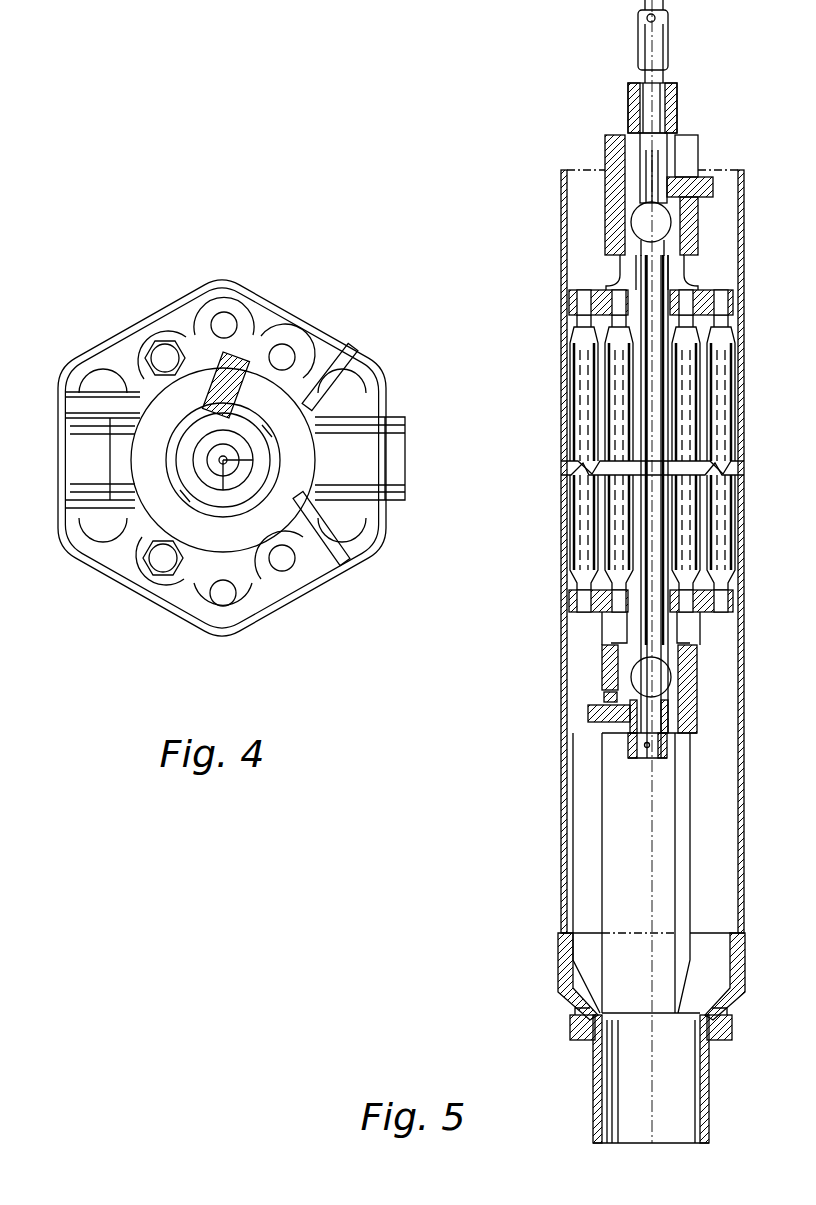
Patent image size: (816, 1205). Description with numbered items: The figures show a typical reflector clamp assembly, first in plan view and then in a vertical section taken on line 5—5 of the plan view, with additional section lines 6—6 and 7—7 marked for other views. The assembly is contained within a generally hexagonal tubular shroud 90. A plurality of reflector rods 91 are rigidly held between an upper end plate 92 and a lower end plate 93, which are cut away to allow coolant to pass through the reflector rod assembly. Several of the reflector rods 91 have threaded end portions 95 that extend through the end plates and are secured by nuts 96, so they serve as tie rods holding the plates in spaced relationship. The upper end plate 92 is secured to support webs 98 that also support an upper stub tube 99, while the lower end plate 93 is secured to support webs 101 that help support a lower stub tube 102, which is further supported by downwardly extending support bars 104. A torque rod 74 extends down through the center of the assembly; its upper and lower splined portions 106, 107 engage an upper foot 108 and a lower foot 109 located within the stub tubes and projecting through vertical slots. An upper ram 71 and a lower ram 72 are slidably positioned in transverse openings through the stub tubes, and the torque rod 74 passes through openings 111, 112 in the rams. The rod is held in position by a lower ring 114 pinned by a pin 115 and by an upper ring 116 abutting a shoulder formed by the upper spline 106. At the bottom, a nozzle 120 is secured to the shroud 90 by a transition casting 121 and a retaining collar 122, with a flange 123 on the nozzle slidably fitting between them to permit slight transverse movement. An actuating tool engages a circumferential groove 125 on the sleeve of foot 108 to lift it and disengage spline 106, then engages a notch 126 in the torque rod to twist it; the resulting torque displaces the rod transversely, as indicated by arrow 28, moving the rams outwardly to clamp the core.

In FIG. 4, the section line 5— 5 is at (222, 270).
In FIG. 4, the section line 6— 6 is at (55, 458).
In FIG. 5, the section line 7— 7 is at (561, 273).
In FIG. 4, the arrow 28 is at (330, 457).
In FIG. 4, the upper ram 71 is at (397, 418).
In FIG. 5, the upper ram 71 is at (672, 222).
In FIG. 5, the lower ram 72 is at (630, 673).
In FIG. 5, the torque rod 74 is at (663, 418).
In FIG. 4, the hexagonal tubular shroud 90 is at (58, 388).
In FIG. 5, the hexagonal tubular shroud 90 is at (744, 887).
In FIG. 5, the reflector rods 91 is at (735, 560).
In FIG. 4, the upper end plate 92 is at (318, 348).
In FIG. 5, the upper end plate 92 is at (738, 292).
In FIG. 5, the lower end plate 93 is at (703, 615).
In FIG. 4, the threaded end portions 95 is at (148, 556).
In FIG. 4, the nuts 96 is at (162, 580).
In FIG. 5, the support webs 98 is at (618, 268).
In FIG. 5, the upper stub tube 99 is at (605, 238).
In FIG. 5, the support webs 101 is at (617, 633).
In FIG. 5, the lower stub tube 102 is at (602, 690).
In FIG. 5, the support bars 104 is at (573, 842).
In FIG. 5, the upper splined portion 106 is at (657, 153).
In FIG. 5, the lower splined portion 107 is at (637, 717).
In FIG. 4, the upper foot 108 is at (258, 330).
In FIG. 5, the upper foot 108 is at (713, 187).
In FIG. 5, the lower foot 109 is at (628, 713).
In FIG. 5, the opening 111 is at (664, 238).
In FIG. 5, the opening 112 is at (667, 678).
In FIG. 5, the lower ring 114 is at (631, 760).
In FIG. 5, the pin 115 is at (649, 749).
In FIG. 5, the upper ring 116 is at (640, 204).
In FIG. 5, the nozzle 120 is at (709, 1133).
In FIG. 5, the transition casting 121 is at (745, 1000).
In FIG. 5, the retaining collar 122 is at (732, 1040).
In FIG. 5, the flange 123 is at (712, 1040).
In FIG. 5, the circumferential groove 125 is at (628, 100).
In FIG. 5, the notch 126 is at (668, 18).